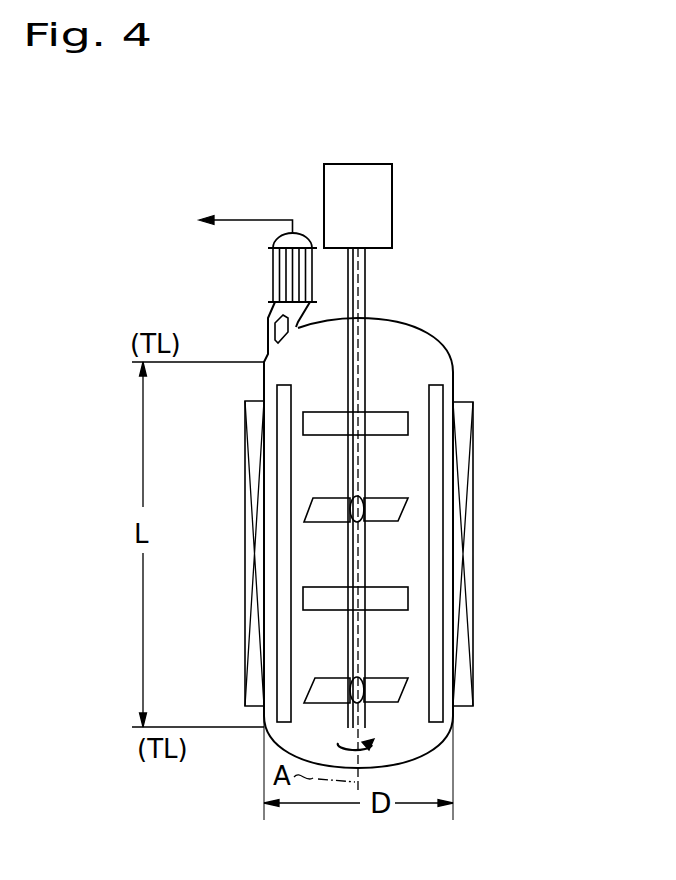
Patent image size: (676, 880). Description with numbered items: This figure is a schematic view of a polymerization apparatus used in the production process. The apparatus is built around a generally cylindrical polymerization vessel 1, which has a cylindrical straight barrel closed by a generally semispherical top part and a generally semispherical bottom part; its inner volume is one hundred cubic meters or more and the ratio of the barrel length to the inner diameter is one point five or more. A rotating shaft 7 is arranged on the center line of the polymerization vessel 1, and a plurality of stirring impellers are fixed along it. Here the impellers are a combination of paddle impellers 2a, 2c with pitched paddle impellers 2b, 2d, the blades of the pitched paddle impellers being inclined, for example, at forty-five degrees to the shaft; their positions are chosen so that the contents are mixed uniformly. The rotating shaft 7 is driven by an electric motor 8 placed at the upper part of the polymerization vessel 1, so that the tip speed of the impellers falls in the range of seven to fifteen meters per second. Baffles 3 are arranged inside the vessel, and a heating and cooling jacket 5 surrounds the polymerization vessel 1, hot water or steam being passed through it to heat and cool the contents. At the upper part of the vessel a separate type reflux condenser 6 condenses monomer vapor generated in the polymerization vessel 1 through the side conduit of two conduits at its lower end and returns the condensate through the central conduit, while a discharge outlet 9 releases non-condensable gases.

The polymerization vessel 1 is at (448, 353).
The paddle impeller 2a is at (393, 412).
The pitched paddle impeller 2b is at (402, 497).
The paddle impeller 2c is at (399, 588).
The pitched paddle impeller 2d is at (398, 678).
The baffles 3 is at (446, 396).
The heating and cooling jacket 5 is at (473, 592).
The reflux condenser 6 is at (281, 268).
The rotating shaft 7 is at (363, 362).
The electric motor 8 is at (375, 205).
The discharge outlet for non-condensable gases 9 is at (246, 219).